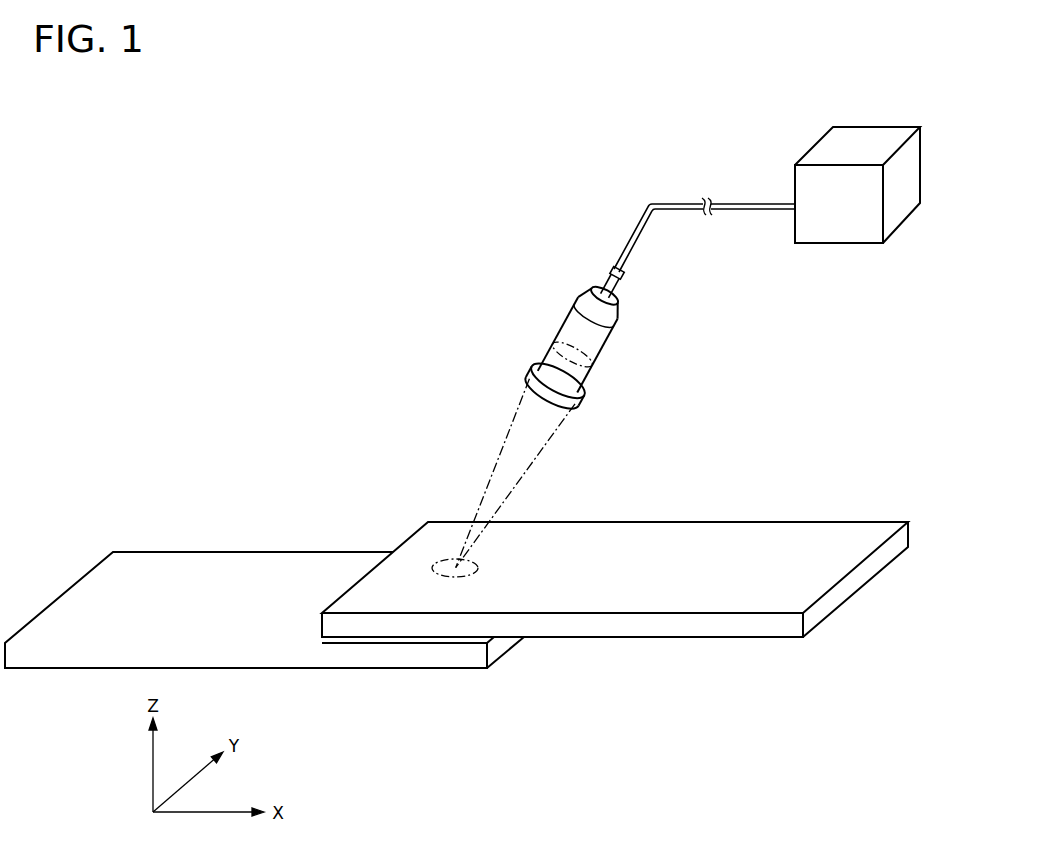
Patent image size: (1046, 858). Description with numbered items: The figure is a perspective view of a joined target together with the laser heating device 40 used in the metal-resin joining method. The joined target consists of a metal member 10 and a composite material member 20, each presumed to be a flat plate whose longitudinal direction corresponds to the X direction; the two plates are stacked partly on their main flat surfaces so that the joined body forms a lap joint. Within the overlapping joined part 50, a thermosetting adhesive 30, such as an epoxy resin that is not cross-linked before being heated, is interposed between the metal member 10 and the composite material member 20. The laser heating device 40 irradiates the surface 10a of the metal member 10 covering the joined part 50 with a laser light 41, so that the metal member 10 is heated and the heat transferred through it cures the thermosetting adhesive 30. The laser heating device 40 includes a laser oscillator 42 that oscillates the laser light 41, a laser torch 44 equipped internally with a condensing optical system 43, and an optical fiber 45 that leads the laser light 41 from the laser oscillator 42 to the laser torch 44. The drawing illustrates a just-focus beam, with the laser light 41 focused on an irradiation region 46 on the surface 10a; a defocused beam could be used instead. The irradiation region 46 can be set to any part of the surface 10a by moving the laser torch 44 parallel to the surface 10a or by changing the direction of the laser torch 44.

The metal member 10 is at (615, 566).
The surface of the metal member 10a is at (468, 600).
The composite material member 20 is at (200, 552).
The thermosetting adhesive 30 is at (487, 648).
The laser heating device 40 is at (553, 258).
The laser light 41 is at (540, 448).
The laser oscillator 42 is at (880, 126).
The condensing optical system 43 is at (580, 357).
The laser torch 44 is at (558, 333).
The optical fiber 45 is at (637, 247).
The irradiation region 46 is at (442, 557).
The joined part 50 is at (318, 676).